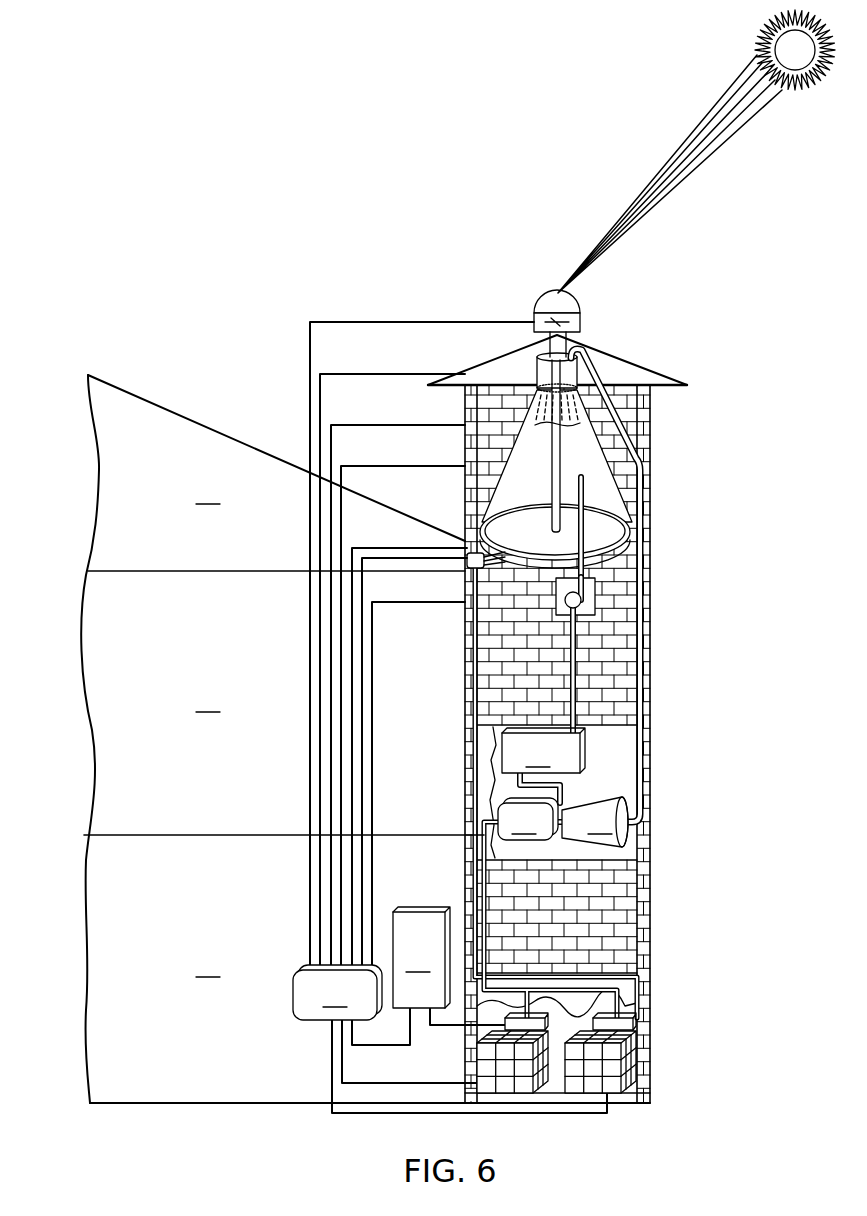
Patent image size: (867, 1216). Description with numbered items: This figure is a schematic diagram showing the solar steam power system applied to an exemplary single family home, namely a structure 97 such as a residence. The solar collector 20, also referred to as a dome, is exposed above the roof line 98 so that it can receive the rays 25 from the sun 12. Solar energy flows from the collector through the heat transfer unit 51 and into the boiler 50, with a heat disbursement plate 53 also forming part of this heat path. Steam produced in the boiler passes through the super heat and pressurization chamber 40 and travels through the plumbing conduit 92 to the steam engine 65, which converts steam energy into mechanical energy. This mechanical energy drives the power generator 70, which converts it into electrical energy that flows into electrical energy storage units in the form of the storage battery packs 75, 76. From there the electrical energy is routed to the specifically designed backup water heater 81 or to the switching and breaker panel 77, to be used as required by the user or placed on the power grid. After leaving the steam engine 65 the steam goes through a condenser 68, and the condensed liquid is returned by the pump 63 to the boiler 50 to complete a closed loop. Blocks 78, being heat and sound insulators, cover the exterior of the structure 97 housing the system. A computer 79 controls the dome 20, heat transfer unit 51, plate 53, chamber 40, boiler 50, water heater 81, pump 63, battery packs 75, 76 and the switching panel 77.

The sun 12 is at (757, 47).
The rays 25 is at (685, 160).
The solar collector 20 is at (577, 302).
The super heat and pressurization chamber 40 is at (582, 378).
The plumbing conduit 92 is at (600, 378).
The boiler 50 is at (593, 415).
The heat transfer unit 51 is at (562, 463).
The heat disbursement plate 53 is at (592, 530).
The pump 63 is at (582, 600).
The backup water heater 81 is at (470, 563).
The blocks 78 is at (650, 692).
The condenser 68 is at (543, 765).
The power generator 70 is at (550, 908).
The steam engine 65 is at (595, 822).
The roof line 98 is at (276, 473).
The structure 97 is at (282, 739).
The computer 79 is at (450, 717).
The switching and breaker panel 77 is at (449, 966).
The storage battery pack 75 is at (627, 1058).
The storage battery pack 76 is at (543, 1072).